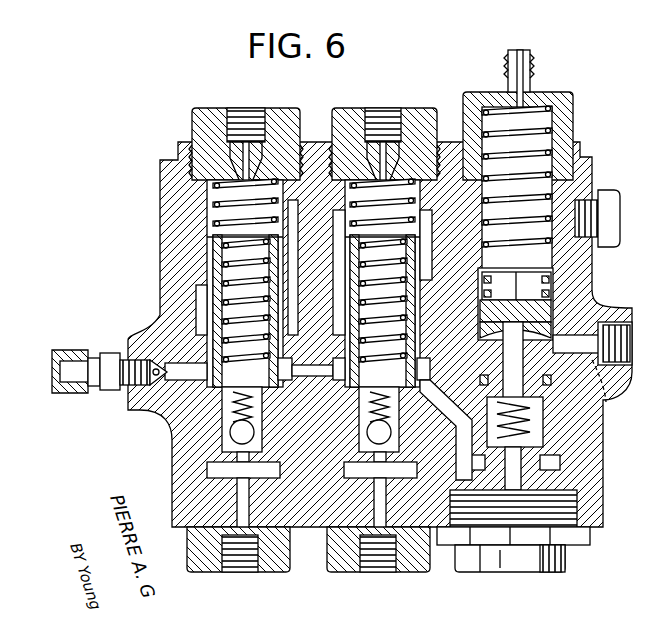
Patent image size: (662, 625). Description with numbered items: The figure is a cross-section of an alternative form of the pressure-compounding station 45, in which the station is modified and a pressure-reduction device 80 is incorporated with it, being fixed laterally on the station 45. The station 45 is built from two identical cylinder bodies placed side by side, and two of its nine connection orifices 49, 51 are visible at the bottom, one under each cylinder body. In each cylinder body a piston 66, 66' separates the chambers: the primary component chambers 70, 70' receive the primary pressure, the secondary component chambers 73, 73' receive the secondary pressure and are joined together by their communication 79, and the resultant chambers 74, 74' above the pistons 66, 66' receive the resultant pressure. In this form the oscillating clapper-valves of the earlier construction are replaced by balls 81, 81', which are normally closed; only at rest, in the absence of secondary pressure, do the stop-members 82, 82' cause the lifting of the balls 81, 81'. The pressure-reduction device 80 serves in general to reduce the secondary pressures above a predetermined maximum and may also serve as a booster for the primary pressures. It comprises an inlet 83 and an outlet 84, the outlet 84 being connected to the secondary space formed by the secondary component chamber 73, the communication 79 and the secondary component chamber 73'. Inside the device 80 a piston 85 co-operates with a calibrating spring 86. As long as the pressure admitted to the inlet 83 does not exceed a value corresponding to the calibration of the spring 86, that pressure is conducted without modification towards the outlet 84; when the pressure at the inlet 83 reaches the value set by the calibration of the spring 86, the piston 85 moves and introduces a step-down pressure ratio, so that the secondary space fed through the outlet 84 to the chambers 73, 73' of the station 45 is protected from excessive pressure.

The pressure-compounding station 45 is at (158, 192).
The resultant chamber 74 is at (200, 270).
The resultant chamber 74' is at (363, 223).
The calibrating spring 86 is at (552, 140).
The pressure-reduction device 80 is at (592, 286).
The inlet 83 is at (633, 345).
The piston 85 is at (552, 418).
The secondary component chamber 73 is at (173, 401).
The secondary component chamber 73' is at (443, 362).
The piston 66 is at (201, 431).
The piston 66' is at (356, 419).
The primary component chamber 70 is at (210, 498).
The primary component chamber 70' is at (362, 492).
The communication 79 is at (313, 372).
The ball 81 is at (282, 411).
The ball 81' is at (414, 420).
The stop-member 82 is at (275, 440).
The stop-member 82' is at (418, 465).
The outlet 84 is at (478, 392).
The connection orifice 49 is at (238, 572).
The connection orifice 51 is at (380, 572).